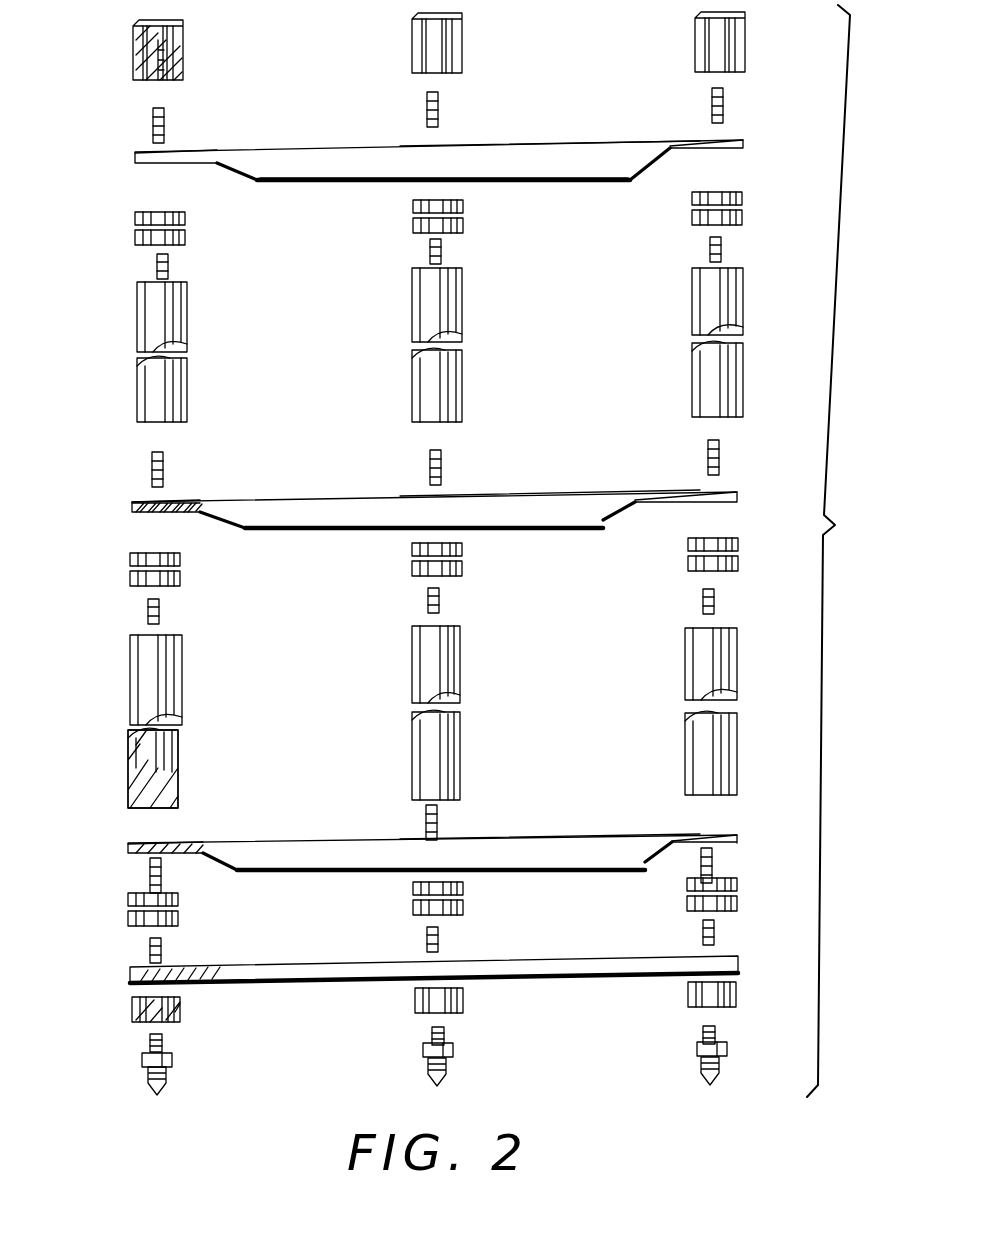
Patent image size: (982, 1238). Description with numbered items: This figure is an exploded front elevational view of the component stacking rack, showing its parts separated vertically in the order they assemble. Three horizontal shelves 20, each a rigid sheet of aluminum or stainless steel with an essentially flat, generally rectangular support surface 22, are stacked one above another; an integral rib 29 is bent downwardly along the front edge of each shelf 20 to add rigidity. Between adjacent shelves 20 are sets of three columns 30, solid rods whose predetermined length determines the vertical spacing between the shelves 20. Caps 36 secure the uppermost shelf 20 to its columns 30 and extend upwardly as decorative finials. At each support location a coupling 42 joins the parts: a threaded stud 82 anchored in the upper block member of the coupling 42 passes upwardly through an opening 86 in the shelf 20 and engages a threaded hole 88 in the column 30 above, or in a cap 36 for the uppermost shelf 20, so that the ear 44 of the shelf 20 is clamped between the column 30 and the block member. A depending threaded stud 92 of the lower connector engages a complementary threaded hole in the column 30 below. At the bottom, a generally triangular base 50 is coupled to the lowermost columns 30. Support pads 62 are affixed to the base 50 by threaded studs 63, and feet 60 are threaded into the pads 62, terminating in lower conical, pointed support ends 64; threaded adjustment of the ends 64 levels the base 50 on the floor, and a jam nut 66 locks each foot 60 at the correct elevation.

The shelf 20 is at (297, 110).
The support surface 22 is at (557, 142).
The integral rib 29 is at (322, 172).
The column 30 is at (137, 326).
The cap 36 is at (133, 46).
The coupling 42 is at (135, 238).
The ear 44 is at (135, 158).
The base 50 is at (362, 982).
The foot 60 is at (163, 1042).
The support pad 62 is at (182, 1010).
The threaded stud 63 is at (161, 950).
The pointed support end 64 is at (166, 1088).
The jam nut 66 is at (172, 1060).
The threaded stud 82 is at (152, 125).
The opening 86 is at (150, 515).
The threaded hole 88 is at (150, 80).
The threaded stud 92 is at (157, 268).